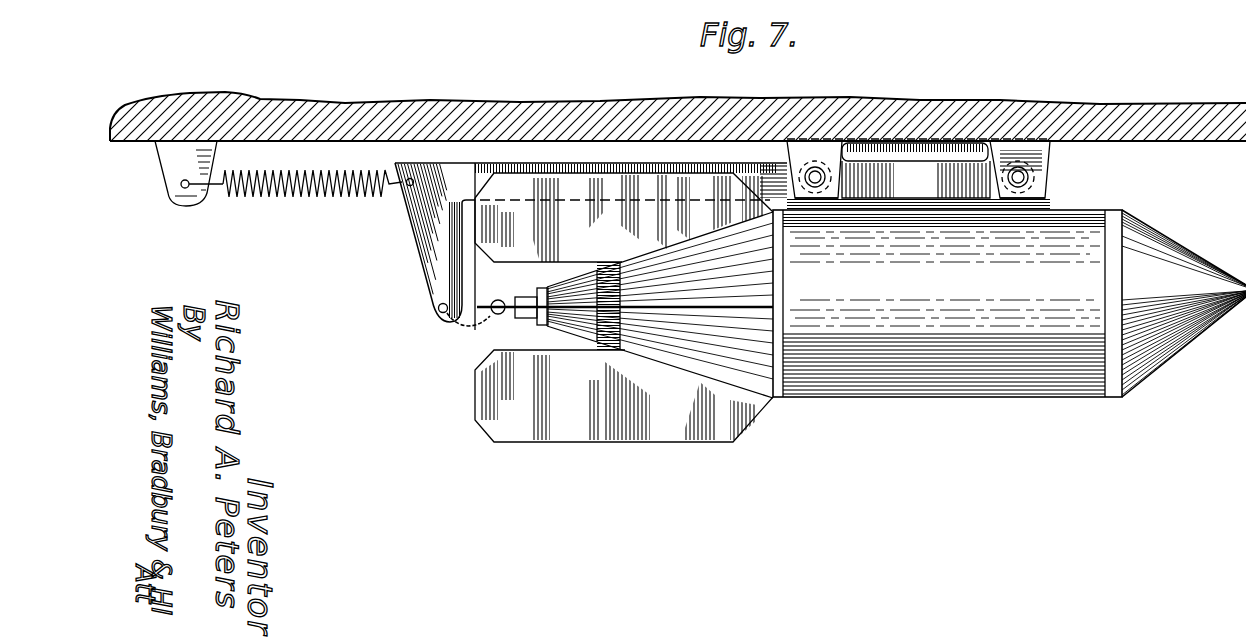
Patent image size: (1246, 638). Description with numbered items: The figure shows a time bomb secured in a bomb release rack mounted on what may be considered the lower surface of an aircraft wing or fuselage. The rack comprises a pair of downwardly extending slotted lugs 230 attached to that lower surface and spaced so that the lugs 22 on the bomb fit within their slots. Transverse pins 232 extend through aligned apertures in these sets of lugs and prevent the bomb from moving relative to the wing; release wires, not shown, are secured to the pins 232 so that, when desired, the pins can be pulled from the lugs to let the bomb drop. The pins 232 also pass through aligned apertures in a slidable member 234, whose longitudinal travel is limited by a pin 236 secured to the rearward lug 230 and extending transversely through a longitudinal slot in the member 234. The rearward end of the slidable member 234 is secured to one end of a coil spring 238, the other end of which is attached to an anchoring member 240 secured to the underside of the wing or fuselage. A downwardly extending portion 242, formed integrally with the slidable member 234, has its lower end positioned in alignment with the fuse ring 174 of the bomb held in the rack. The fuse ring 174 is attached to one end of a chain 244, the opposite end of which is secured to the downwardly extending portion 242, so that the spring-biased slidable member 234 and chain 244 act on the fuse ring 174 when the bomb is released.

The lugs 22 is at (840, 205).
The fuse ring 174 is at (528, 286).
The slotted lugs 230 is at (812, 132).
The transverse pins 232 is at (815, 190).
The slidable member 234 is at (914, 183).
The pin 236 is at (862, 128).
The coil spring 238 is at (334, 194).
The anchoring member 240 is at (170, 168).
The downwardly extending portion 242 is at (428, 270).
The chain 244 is at (484, 322).